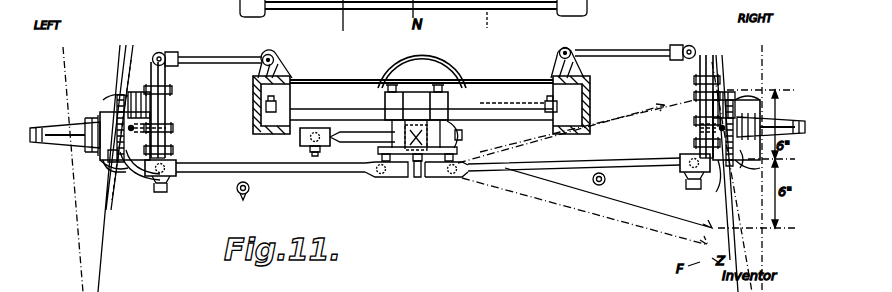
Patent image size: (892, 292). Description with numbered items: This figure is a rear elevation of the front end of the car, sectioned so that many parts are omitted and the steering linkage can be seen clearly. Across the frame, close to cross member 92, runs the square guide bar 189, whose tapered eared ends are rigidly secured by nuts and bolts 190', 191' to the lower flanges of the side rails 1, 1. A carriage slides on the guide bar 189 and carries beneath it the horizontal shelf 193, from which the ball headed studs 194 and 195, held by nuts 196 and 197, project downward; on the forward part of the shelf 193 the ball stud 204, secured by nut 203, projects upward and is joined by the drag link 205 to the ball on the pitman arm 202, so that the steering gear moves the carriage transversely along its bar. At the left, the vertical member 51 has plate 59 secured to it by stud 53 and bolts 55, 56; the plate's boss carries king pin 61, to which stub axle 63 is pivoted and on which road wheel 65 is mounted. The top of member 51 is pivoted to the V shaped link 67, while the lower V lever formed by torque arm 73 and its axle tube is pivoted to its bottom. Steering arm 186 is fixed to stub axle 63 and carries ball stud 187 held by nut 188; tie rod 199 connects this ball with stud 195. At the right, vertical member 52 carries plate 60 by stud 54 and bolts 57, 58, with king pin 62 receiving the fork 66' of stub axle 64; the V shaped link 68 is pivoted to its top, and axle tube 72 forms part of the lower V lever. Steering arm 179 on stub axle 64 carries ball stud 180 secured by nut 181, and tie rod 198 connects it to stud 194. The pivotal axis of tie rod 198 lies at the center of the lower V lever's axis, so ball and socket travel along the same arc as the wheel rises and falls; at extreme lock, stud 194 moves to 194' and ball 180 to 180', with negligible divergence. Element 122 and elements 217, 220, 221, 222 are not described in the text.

The side rail 1 is at (253, 97).
The vertical member 51 is at (166, 106).
The vertical member 52 is at (694, 96).
The stud 53 is at (174, 128).
The stud 54 is at (694, 121).
The bolt and nut 55 is at (171, 90).
The bolt and nut 56 is at (174, 150).
The bolt and nut 57 is at (694, 80).
The bolt and nut 58 is at (694, 143).
The plate 59 is at (156, 78).
The plate 60 is at (690, 62).
The king pin 61 is at (131, 78).
The king pin 62 is at (730, 94).
The stub axle 63 is at (55, 126).
The stub axle 64 is at (780, 115).
The road wheel 65 is at (112, 172).
The fork 66' is at (734, 156).
The V shaped link 67 is at (232, 56).
The V shaped link 68 is at (620, 52).
The axle tube 72 is at (606, 181).
The torque arm 73 is at (243, 198).
The cross member 92 is at (512, 93).
The steering gear block 122 is at (414, 100).
The steering arm 179 is at (697, 192).
The ball headed stud 180 is at (669, 178).
The extreme lock position of ball stud 180 180' is at (735, 176).
The nut 181 is at (665, 196).
The steering arm 186 is at (145, 188).
The ball headed stud 187 is at (172, 176).
The nut 188 is at (170, 192).
The guide bar 189 is at (358, 109).
The bolt and nut 190' is at (286, 98).
The bolt and nut 191' is at (539, 98).
The shelf 193 is at (490, 152).
The ball headed stud 194 is at (452, 181).
The extreme lock position of ball stud 194 194' is at (585, 211).
The ball headed stud 195 is at (378, 178).
The nut 196 is at (452, 145).
The nut 197 is at (378, 146).
The tie rod 198 is at (585, 155).
The tie rod 199 is at (264, 163).
The pitman arm 202 is at (312, 150).
The nut 203 is at (418, 178).
The ball headed stud 204 is at (395, 128).
The drag link 205 is at (333, 146).
The bolt 217 is at (392, 86).
The bolt 220 is at (440, 86).
The center bracket 221 is at (396, 128).
The curved arm 222 is at (452, 122).